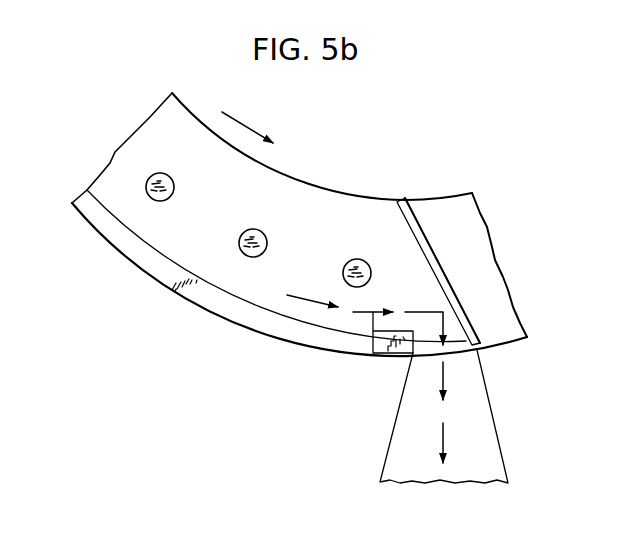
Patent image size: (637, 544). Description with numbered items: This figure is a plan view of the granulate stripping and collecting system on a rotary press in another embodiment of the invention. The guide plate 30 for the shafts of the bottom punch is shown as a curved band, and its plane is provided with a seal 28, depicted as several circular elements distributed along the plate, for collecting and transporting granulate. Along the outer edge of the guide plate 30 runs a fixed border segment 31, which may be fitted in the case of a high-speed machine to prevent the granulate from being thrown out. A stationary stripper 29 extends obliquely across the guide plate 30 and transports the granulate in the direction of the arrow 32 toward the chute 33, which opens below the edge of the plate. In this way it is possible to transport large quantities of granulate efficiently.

The seal 28 is at (241, 240).
The stripper 29 is at (437, 273).
The guide plate 30 is at (295, 190).
The border segments 31 is at (250, 315).
The arrow 32 is at (373, 356).
The chute 33 is at (488, 443).